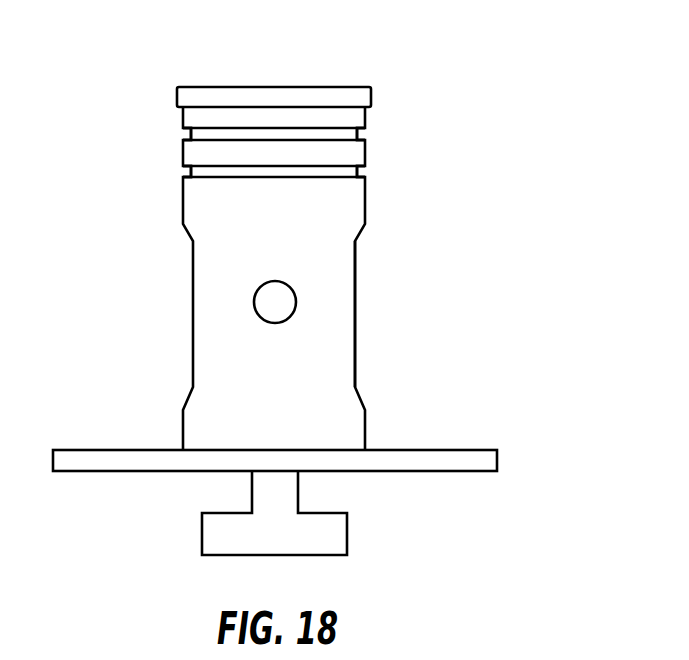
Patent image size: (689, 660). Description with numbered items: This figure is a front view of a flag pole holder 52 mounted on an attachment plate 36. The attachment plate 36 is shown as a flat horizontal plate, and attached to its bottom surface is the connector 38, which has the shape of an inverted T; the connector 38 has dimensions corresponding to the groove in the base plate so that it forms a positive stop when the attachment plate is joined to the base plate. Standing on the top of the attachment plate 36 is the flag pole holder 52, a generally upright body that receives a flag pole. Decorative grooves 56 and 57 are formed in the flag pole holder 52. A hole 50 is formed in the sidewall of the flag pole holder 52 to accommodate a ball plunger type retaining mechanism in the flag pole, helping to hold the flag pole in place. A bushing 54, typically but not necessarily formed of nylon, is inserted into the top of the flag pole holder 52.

The attachment plate 36 is at (485, 458).
The connector 38 is at (323, 535).
The hole 50 is at (275, 301).
The flag pole holder 52 is at (320, 256).
The bushing 54 is at (360, 98).
The decorative groove 56 is at (343, 137).
The decorative groove 57 is at (355, 318).